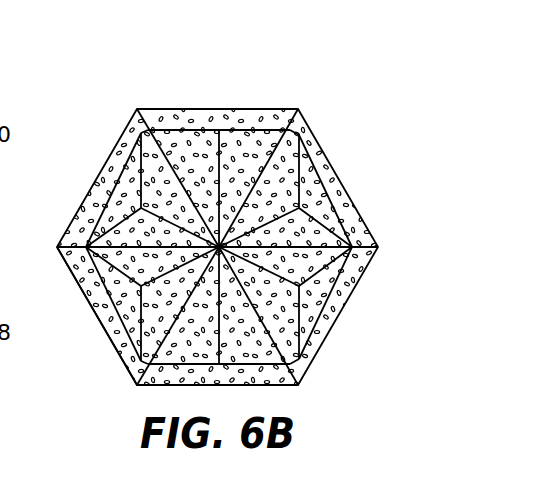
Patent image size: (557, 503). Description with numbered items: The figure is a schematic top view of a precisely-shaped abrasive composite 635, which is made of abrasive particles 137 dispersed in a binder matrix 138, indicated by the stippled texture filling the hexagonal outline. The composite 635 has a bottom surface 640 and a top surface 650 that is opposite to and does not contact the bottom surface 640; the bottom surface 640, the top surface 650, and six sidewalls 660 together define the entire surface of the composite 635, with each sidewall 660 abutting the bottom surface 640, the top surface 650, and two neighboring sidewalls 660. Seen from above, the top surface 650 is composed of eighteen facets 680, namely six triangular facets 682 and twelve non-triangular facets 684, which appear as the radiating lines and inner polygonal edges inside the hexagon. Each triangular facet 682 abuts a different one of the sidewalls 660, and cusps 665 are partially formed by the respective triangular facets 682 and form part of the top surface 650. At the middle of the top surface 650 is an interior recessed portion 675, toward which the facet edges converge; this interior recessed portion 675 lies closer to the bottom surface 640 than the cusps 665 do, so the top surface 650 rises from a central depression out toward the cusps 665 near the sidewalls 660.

The shaped abrasive composite 635 is at (293, 75).
The interior recessed portion 675 is at (193, 134).
The top surface 650 is at (253, 157).
The non-triangular facets 684 is at (285, 147).
The triangular facets 682 is at (320, 197).
The facets 680 is at (282, 333).
The sidewalls 660 is at (124, 349).
The bottom surface 640 is at (72, 268).
The cusps 665 is at (78, 223).
The abrasive particles 137 is at (145, 183).
The binder matrix 138 is at (150, 150).